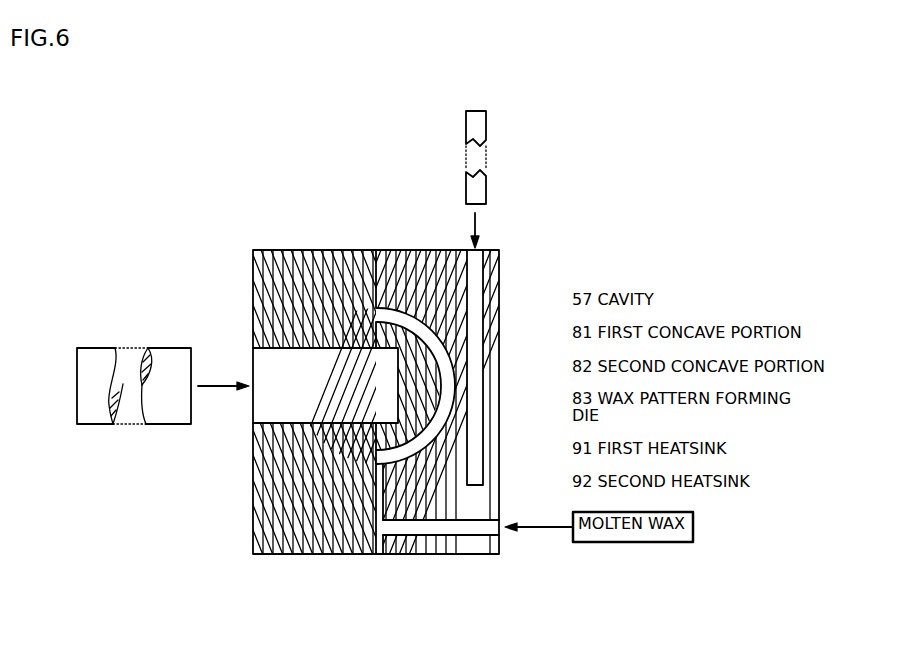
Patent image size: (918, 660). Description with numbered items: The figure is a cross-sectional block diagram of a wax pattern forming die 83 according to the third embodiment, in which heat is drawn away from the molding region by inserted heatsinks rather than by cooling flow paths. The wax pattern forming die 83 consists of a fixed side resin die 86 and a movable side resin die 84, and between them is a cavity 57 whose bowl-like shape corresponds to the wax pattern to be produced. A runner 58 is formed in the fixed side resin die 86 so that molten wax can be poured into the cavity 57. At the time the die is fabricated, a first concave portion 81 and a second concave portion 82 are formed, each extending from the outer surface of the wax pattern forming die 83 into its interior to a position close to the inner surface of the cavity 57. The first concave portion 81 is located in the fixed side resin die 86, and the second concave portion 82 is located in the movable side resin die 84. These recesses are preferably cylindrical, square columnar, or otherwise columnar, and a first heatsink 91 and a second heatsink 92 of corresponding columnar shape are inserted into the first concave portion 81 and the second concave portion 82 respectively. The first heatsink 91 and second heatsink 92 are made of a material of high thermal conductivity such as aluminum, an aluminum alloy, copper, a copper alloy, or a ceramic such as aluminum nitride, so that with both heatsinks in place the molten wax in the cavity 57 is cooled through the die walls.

The cavity 57 is at (448, 357).
The runner 58 is at (383, 512).
The first concave portion 81 is at (485, 320).
The second concave portion 82 is at (277, 421).
The wax pattern forming die 83 is at (460, 591).
The movable side resin die 84 is at (373, 558).
The fixed side resin die 86 is at (499, 558).
The first heatsink 91 is at (486, 196).
The second heatsink 92 is at (96, 425).